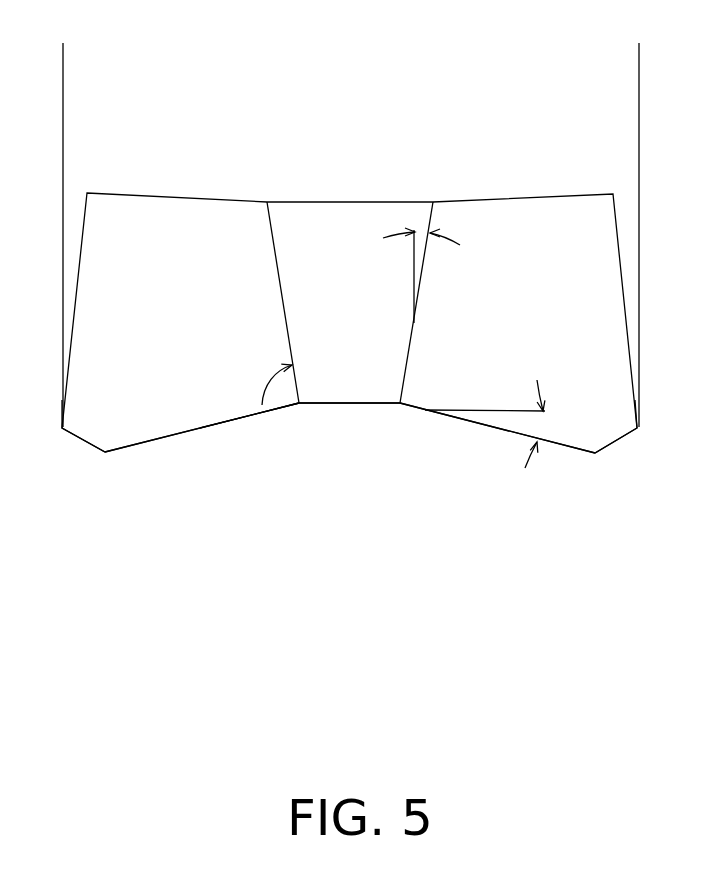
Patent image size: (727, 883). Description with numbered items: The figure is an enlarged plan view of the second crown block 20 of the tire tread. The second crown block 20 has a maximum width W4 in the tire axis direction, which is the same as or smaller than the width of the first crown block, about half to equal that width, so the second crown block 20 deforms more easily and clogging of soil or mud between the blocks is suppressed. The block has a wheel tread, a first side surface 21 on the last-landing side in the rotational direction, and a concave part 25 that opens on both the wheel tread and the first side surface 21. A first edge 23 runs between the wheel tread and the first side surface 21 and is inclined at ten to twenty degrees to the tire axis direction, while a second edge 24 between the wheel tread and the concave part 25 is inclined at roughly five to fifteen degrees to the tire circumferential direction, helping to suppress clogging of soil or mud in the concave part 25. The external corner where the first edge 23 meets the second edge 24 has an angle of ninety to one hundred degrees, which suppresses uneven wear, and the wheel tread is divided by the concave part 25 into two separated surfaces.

The maximum width W4 is at (639, 49).
The second crown block 20 is at (122, 185).
The second edge 24 is at (278, 265).
The concave part 25 is at (326, 268).
The first side surface 21 is at (287, 412).
The first edge 23 is at (162, 438).